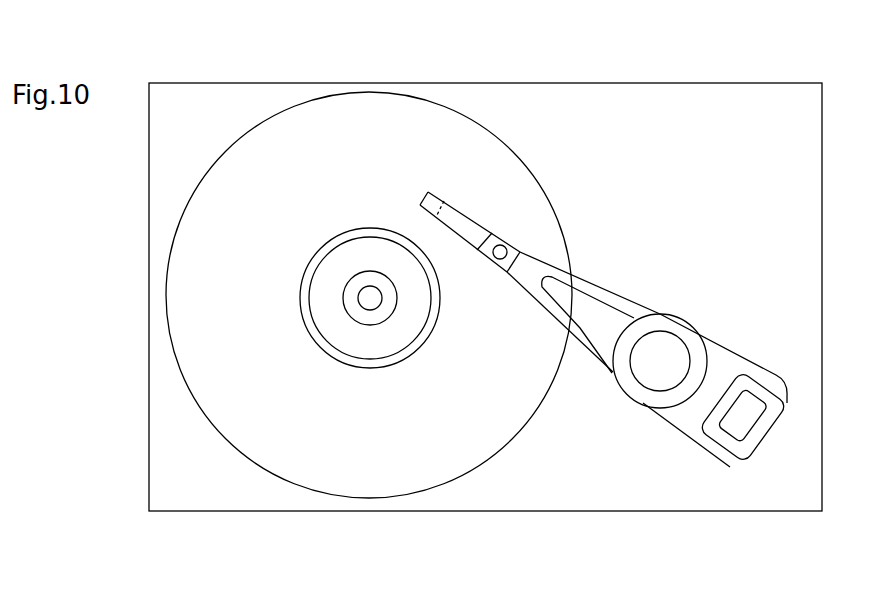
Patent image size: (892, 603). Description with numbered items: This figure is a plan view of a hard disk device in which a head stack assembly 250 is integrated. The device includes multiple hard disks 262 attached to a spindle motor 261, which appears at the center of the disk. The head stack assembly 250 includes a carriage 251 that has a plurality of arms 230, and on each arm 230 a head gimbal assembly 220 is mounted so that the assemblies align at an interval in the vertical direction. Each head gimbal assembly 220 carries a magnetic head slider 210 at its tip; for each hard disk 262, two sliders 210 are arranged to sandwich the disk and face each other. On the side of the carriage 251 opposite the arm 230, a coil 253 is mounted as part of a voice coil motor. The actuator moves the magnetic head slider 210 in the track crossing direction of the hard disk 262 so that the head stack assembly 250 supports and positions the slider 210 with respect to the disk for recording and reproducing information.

The magnetic head slider 210 is at (440, 198).
The head gimbal assembly 220 is at (473, 248).
The arm 230 is at (593, 358).
The head stack assembly 250 is at (666, 432).
The carriage 251 is at (668, 313).
The coil 253 is at (776, 447).
The spindle motor 261 is at (372, 310).
The hard disk 262 is at (297, 486).